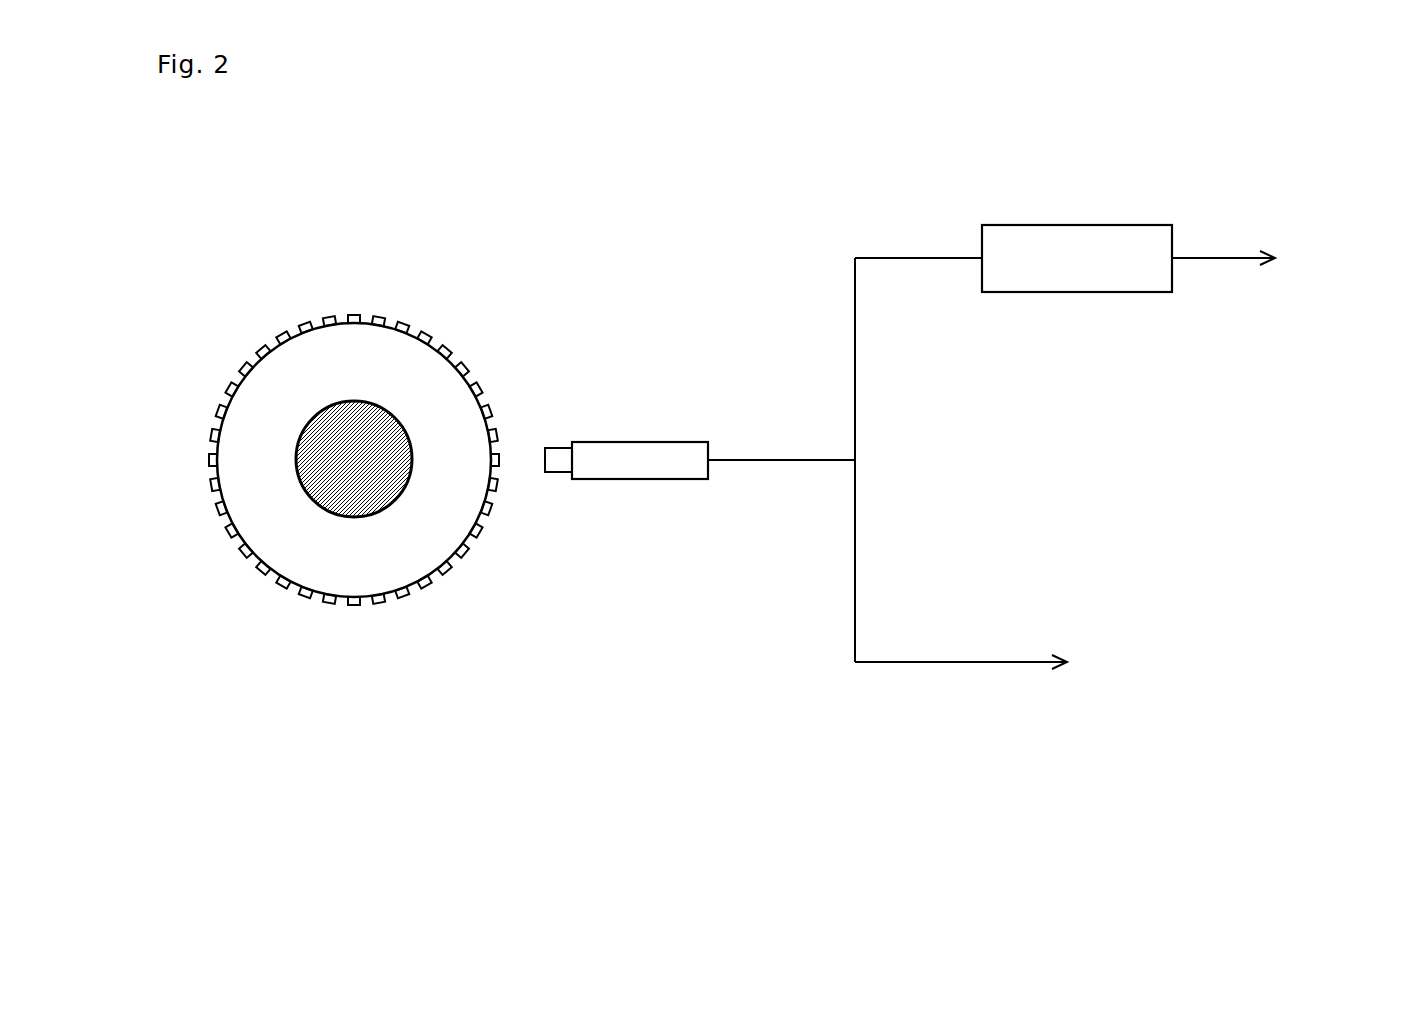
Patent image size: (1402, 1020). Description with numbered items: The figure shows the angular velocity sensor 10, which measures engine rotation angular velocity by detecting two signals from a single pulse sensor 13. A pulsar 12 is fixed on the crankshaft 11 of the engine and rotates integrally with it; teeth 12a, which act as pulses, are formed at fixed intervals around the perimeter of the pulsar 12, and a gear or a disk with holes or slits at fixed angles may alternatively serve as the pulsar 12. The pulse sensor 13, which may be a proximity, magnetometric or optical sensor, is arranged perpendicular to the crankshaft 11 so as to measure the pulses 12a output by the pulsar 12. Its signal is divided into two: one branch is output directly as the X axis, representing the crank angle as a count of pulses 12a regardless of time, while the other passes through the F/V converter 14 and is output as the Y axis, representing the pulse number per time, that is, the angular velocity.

The angular velocity sensor 10 is at (776, 381).
The crankshaft 11 is at (375, 485).
The pulsar 12 is at (365, 431).
The teeth 12a is at (450, 350).
The pulse sensor 13 is at (640, 448).
The F/V converter 14 is at (1078, 223).